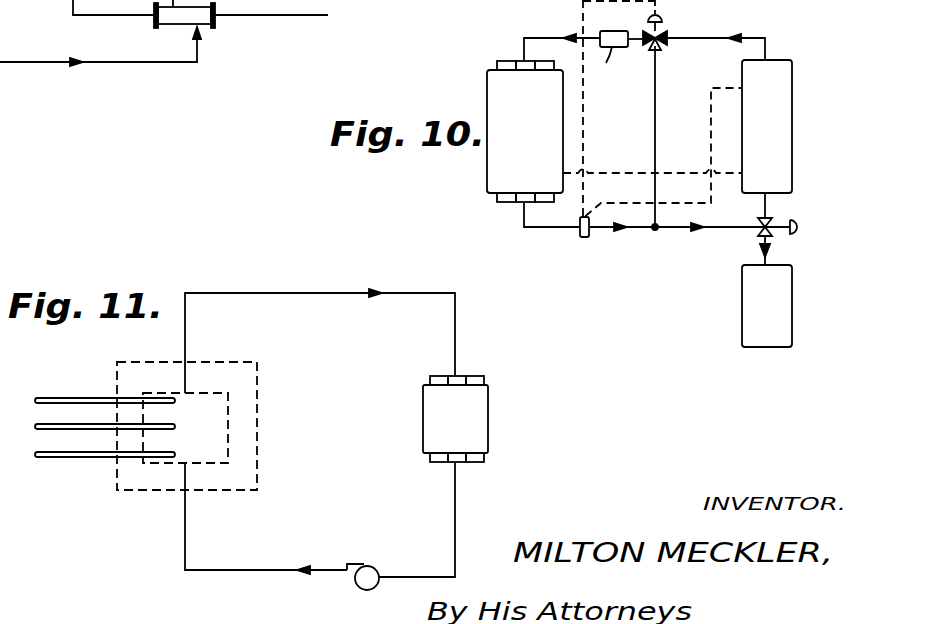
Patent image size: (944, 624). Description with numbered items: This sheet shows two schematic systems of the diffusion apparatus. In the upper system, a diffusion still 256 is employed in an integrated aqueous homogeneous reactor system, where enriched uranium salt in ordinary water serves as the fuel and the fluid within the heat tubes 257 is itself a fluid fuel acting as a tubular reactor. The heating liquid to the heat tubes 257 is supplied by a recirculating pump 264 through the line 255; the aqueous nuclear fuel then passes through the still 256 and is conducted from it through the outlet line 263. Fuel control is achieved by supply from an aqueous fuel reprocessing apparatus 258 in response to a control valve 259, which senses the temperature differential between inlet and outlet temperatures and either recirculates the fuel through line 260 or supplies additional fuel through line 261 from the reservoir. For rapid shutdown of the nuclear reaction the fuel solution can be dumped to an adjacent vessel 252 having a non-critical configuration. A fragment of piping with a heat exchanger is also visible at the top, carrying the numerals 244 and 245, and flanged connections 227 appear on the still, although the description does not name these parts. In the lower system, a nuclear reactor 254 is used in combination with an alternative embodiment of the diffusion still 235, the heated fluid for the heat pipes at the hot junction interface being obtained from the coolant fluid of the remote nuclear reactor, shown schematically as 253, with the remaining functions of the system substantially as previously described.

In FIG. 10, the supply conduit 244 is at (96, 58).
In FIG. 10, the heat exchanger 245 is at (205, 26).
In FIG. 10, the adjacent vessel 252 is at (792, 313).
In FIG. 11, the remote nuclear reactor coolant fluid 253 is at (328, 288).
In FIG. 11, the nuclear reactor 254 is at (230, 362).
In FIG. 10, the line 255 is at (572, 34).
In FIG. 10, the diffusion still 256 is at (487, 92).
In FIG. 10, the heat tubes 257 is at (497, 63).
In FIG. 10, the aqueous fuel reprocessing apparatus 258 is at (792, 140).
In FIG. 10, the control valve 259 is at (668, 36).
In FIG. 10, the line 260 is at (655, 99).
In FIG. 10, the line 261 is at (756, 36).
In FIG. 10, the outlet line 263 is at (540, 228).
In FIG. 10, the recirculating pump 264 is at (614, 31).
In FIG. 11, the flanged connection 227 is at (472, 376).
In FIG. 11, the diffusion still 235 is at (493, 416).